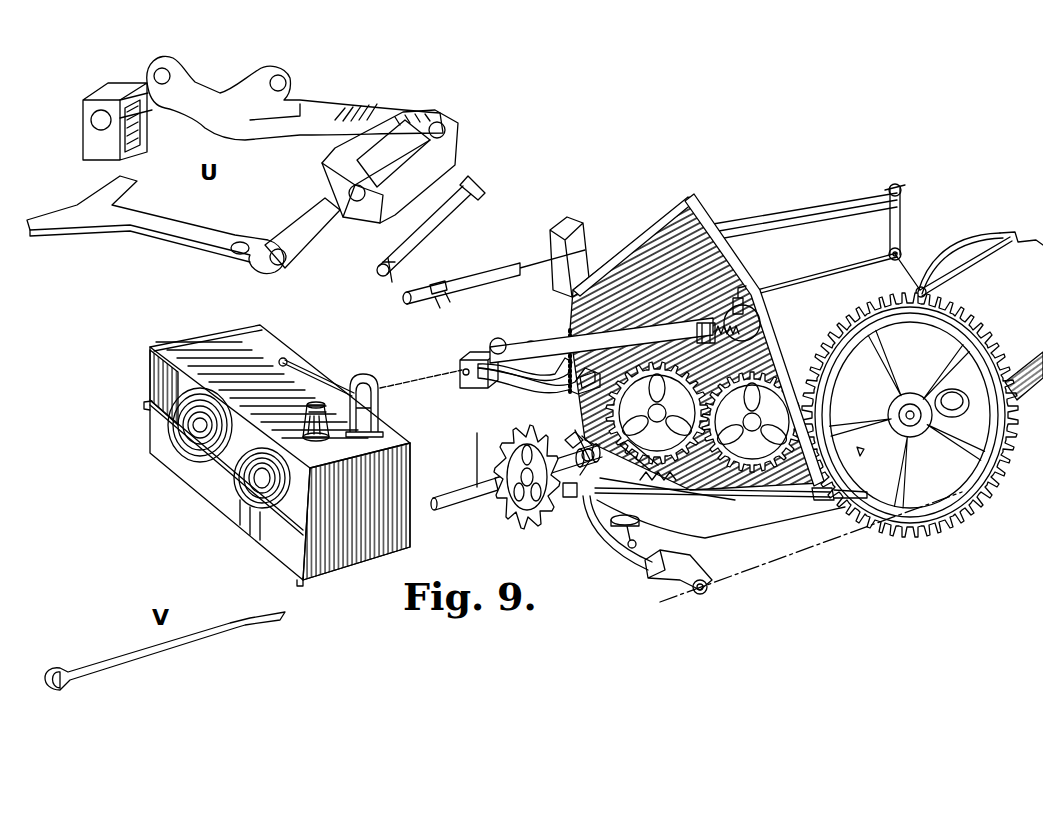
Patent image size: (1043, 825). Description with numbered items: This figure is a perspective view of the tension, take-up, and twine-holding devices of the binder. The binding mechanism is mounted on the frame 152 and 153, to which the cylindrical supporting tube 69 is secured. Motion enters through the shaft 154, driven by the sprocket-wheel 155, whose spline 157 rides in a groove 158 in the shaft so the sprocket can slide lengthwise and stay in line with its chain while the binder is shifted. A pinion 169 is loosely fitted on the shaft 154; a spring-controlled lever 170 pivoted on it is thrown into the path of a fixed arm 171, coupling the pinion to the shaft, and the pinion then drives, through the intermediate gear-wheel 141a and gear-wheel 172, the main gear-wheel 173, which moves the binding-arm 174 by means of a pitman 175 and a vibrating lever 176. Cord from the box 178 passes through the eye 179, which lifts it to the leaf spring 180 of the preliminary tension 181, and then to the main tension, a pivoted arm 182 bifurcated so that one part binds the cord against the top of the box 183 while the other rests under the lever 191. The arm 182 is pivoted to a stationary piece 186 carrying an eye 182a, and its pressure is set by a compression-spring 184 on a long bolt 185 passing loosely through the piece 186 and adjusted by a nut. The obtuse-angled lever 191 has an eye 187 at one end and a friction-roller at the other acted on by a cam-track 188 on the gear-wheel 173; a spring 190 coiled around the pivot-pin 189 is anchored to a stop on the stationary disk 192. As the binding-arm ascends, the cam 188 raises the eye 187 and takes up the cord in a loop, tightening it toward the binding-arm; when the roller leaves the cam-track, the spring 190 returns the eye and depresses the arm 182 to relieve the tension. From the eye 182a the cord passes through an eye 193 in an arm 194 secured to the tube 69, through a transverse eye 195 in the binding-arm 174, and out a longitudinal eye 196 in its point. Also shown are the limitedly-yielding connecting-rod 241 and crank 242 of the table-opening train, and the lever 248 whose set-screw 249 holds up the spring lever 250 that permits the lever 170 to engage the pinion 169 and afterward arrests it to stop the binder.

The supporting tube 69 is at (804, 243).
The gear 141a is at (668, 408).
The binder-frame 152 is at (684, 333).
The binder-frame 153 is at (1024, 376).
The shaft 154 is at (516, 477).
The sprocket-wheel 155 is at (552, 423).
The spline 157 is at (495, 522).
The groove 158 is at (474, 451).
The pinion 169 is at (590, 525).
The lever 170 is at (590, 418).
The fixed arm 171 is at (581, 449).
The intermediate gear-wheel 172 is at (752, 407).
The main gear-wheel 173 is at (910, 415).
The binding-arm 174 is at (965, 255).
The pitman 175 is at (715, 497).
The vibrating lever 176 is at (721, 508).
The cord box 178 is at (277, 455).
The eye 179 is at (314, 427).
The leaf spring 180 is at (199, 524).
The preliminary tension 181 is at (364, 396).
The pivoted arm 182 is at (299, 278).
The eye 182a is at (353, 196).
The tension box 183 is at (290, 235).
The compression-spring 184 is at (565, 325).
The long bolt 185 is at (565, 300).
The stationary piece 186 is at (360, 228).
The eye 187 is at (496, 341).
The cam-track 188 is at (910, 415).
The pivot-pin 189 is at (695, 332).
The spring 190 is at (762, 314).
The obtuse-angled lever 191 is at (657, 340).
The stationary disk 192 is at (759, 300).
The eye 193 is at (909, 262).
The arm 194 is at (900, 219).
The transverse eye 195 is at (926, 282).
The longitudinal eye 196 is at (1021, 221).
The limitedly-yielding connecting-rod 241 is at (811, 547).
The crank 242 is at (679, 581).
The lever 248 is at (640, 522).
The set-screw 249 is at (644, 545).
The spring lever 250 is at (648, 461).